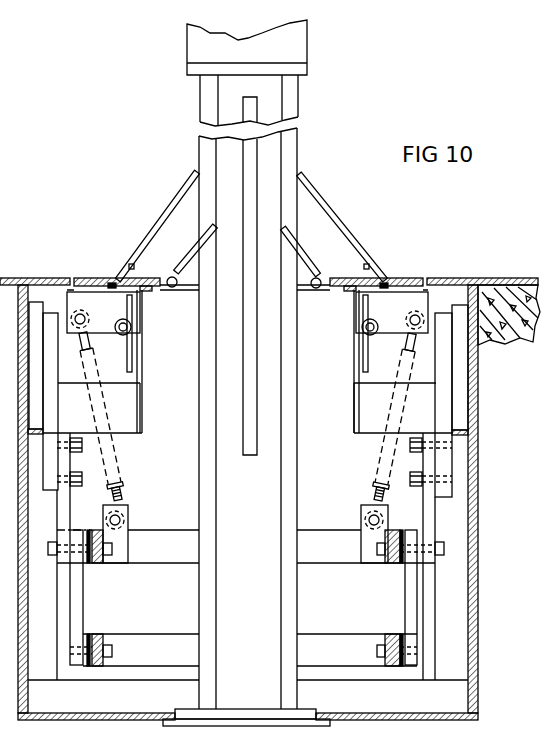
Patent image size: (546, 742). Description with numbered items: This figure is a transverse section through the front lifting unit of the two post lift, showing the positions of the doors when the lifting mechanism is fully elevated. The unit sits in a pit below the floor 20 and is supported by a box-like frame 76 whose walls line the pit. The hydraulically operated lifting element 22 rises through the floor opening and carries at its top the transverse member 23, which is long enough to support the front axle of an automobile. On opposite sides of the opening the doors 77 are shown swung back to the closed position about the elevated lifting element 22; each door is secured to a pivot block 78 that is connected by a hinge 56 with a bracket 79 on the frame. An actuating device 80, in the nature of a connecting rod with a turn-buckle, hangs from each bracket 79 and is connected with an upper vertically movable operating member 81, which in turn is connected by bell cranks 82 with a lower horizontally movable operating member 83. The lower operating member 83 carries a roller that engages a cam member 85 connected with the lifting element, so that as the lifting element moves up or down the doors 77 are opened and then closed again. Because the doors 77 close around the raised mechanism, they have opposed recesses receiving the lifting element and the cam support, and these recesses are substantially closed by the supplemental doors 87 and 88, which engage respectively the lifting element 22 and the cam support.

The floor 20 is at (530, 278).
The lifting element 22 is at (297, 145).
The transverse member 23 is at (306, 65).
The hinge 56 is at (131, 328).
The box-like frame 76 is at (478, 381).
The doors 77 is at (104, 278).
The pivot block 78 is at (363, 322).
The bracket 79 is at (129, 384).
The actuating device 80 is at (110, 451).
The upper operating member 81 is at (146, 539).
The bell cranks 82 is at (83, 596).
The lower operating member 83 is at (153, 643).
The cam member 85 is at (247, 375).
The supplemental door 87 is at (344, 227).
The supplemental door 88 is at (185, 268).